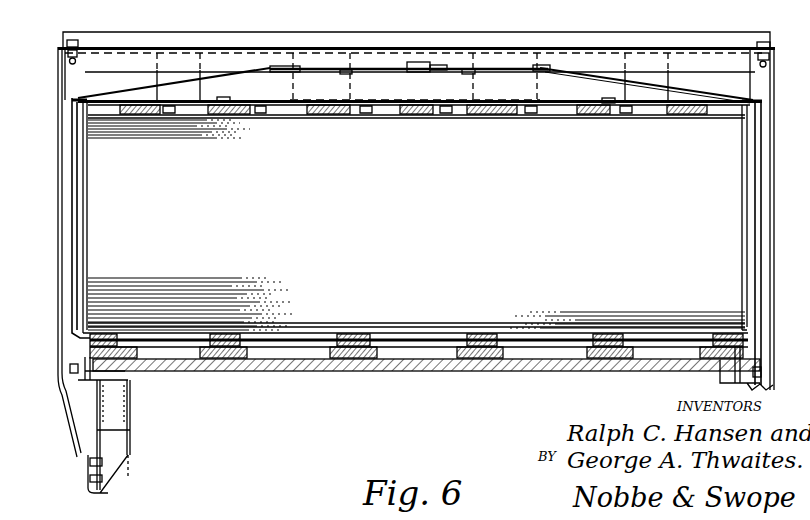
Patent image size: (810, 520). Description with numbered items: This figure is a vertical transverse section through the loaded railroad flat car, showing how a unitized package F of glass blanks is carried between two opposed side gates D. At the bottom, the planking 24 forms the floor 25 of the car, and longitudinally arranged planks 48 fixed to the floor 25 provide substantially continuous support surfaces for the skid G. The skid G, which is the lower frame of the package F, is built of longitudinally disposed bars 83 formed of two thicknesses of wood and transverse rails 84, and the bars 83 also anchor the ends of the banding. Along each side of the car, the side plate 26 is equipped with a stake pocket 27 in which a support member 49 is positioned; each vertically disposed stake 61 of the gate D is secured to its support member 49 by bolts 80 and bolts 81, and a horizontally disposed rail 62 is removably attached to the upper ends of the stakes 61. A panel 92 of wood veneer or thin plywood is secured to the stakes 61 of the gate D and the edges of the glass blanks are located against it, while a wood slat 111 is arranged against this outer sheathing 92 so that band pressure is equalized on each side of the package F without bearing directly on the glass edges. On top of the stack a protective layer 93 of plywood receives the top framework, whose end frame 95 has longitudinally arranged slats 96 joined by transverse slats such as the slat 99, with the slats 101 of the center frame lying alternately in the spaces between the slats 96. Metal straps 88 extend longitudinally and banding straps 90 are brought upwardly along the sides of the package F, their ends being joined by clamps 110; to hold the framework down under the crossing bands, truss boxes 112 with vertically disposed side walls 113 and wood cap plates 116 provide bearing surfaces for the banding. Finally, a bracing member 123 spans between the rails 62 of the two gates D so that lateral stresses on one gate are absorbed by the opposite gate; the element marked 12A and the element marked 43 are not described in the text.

The bolt 12A is at (67, 43).
The planking 24 is at (388, 368).
The floor 25 is at (304, 371).
The side plate 26 is at (130, 438).
The stake pocket 27 is at (108, 402).
The top panel 43 is at (187, 62).
The plank 48 is at (137, 369).
The support member 49 is at (91, 382).
The stake 61 is at (65, 113).
The rail 62 is at (66, 60).
The bolt 80 is at (92, 479).
The bolt 81 is at (70, 372).
The bar 83 is at (230, 363).
The transverse rail 84 is at (518, 331).
The strap 88 is at (232, 99).
The banding strap 90 is at (212, 75).
The panel 92 is at (88, 197).
The protective layer 93 is at (694, 106).
The end frame 95 is at (141, 104).
The slat 96 is at (240, 114).
The slat 99 is at (558, 107).
The slat 101 is at (467, 107).
The clamp 110 is at (414, 63).
The wood slat 111 is at (80, 152).
The truss box 112 is at (368, 75).
The side wall 113 is at (343, 78).
The cap plate 116 is at (300, 65).
The bracing member 123 is at (490, 43).
The side gate D is at (67, 90).
The unitized package F is at (110, 238).
The skid G is at (372, 326).